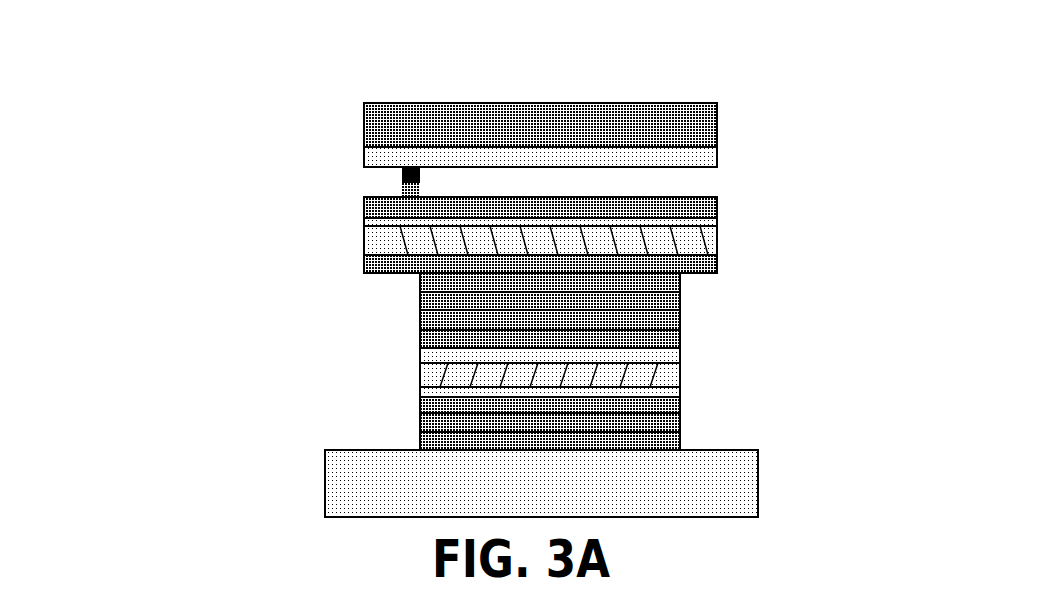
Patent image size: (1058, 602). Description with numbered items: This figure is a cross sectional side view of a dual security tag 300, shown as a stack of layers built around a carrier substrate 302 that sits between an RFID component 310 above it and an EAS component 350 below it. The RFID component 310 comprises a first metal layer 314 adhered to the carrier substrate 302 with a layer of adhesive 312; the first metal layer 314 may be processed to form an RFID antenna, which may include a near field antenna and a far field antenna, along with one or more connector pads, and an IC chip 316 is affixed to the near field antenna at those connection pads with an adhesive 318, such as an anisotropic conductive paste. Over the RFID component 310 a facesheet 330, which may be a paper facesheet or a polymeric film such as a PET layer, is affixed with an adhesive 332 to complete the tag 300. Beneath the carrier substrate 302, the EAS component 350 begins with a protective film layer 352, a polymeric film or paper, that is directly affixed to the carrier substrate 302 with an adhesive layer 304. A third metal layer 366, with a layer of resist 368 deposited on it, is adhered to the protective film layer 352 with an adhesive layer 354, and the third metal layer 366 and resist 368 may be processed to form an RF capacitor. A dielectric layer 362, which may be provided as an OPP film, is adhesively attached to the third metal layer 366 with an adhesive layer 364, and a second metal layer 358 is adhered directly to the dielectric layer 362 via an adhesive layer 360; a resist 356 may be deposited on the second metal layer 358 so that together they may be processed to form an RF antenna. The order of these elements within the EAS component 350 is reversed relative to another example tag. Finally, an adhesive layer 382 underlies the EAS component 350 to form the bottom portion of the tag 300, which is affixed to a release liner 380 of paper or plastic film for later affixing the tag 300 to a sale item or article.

The tag 300 is at (555, 73).
The carrier substrate 302 is at (390, 243).
The adhesive layer 304 is at (390, 268).
The RFID component 310 is at (138, 74).
The layer of adhesive 312 is at (395, 222).
The first metal layer 314 is at (400, 205).
The IC chip 316 is at (392, 168).
The adhesive 318 is at (387, 185).
The facesheet 330 is at (719, 106).
The adhesive 332 is at (720, 155).
The EAS component 350 is at (825, 527).
The protective film layer 352 is at (590, 278).
The adhesive layer 354 is at (630, 293).
The resist 356 is at (640, 425).
The second metal layer 358 is at (657, 410).
The adhesive layer 360 is at (660, 393).
The dielectric layer 362 is at (678, 377).
The adhesive layer 364 is at (667, 353).
The third metal layer 366 is at (643, 340).
The resist 368 is at (647, 317).
The release liner 380 is at (427, 492).
The adhesive layer 382 is at (470, 437).